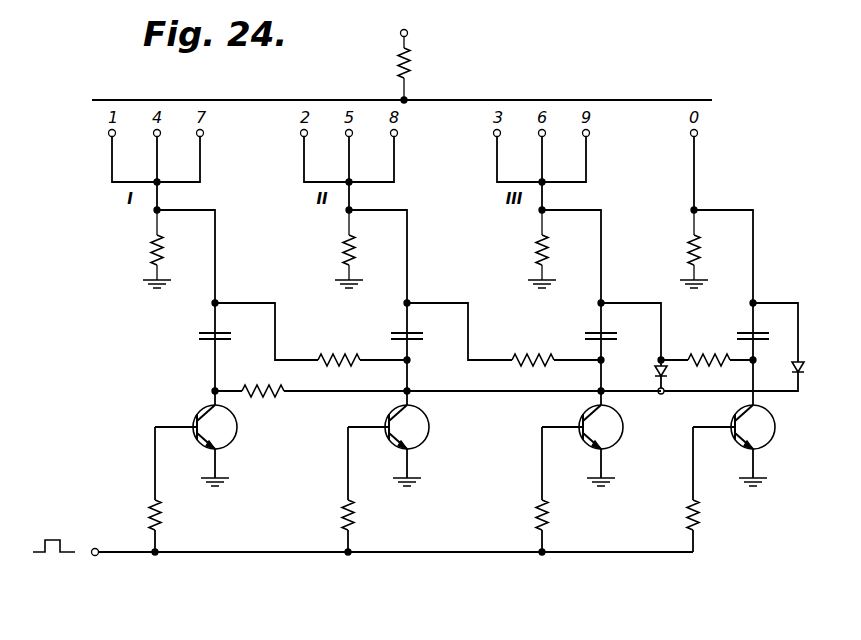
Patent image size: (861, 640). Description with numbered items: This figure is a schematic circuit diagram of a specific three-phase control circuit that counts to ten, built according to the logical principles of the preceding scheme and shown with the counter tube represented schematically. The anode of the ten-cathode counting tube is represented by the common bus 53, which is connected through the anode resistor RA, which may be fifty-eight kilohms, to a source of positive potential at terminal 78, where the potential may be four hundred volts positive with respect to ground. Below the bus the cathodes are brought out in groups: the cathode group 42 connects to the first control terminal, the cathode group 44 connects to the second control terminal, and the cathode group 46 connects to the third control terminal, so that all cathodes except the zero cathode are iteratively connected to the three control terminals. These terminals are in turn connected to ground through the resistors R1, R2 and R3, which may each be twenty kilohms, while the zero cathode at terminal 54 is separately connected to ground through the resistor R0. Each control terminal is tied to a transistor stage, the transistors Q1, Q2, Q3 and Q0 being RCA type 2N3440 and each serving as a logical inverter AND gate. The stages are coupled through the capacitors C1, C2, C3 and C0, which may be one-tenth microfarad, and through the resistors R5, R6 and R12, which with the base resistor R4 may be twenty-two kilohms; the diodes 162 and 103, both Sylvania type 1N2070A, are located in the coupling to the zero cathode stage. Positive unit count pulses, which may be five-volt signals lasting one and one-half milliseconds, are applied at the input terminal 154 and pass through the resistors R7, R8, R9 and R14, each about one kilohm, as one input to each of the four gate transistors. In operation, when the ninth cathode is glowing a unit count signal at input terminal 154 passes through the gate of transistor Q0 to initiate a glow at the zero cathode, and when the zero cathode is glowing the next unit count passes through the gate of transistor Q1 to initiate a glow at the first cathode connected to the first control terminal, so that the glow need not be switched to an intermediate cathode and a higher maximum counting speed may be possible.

The common bus line 53 is at (626, 100).
The terminal 78 is at (408, 34).
The anode resistor RA is at (412, 63).
The terminal group I (1,4,7) 42 is at (196, 182).
The terminal group II (2,5,8) 44 is at (380, 183).
The terminal group III (3,6,9) 46 is at (575, 183).
The zero terminal 54 is at (719, 146).
The resistor R1 is at (150, 248).
The resistor R2 is at (343, 247).
The resistor R3 is at (538, 247).
The resistor R0 is at (690, 250).
The capacitor C1 is at (196, 332).
The capacitor C2 is at (418, 342).
The capacitor C3 is at (620, 340).
The capacitor C0 is at (762, 331).
The resistor R5 is at (335, 355).
The resistor R6 is at (530, 355).
The resistor R12 is at (700, 352).
The diode 162 is at (672, 380).
The diode 103 is at (808, 368).
The resistor R4 is at (262, 398).
The transistor Q1 is at (230, 432).
The transistor Q2 is at (420, 432).
The transistor Q3 is at (612, 425).
The transistor Q0 is at (765, 430).
The resistor R7 is at (164, 515).
The resistor R8 is at (356, 518).
The resistor R9 is at (550, 516).
The resistor R14 is at (700, 524).
The input terminal 154 is at (93, 556).